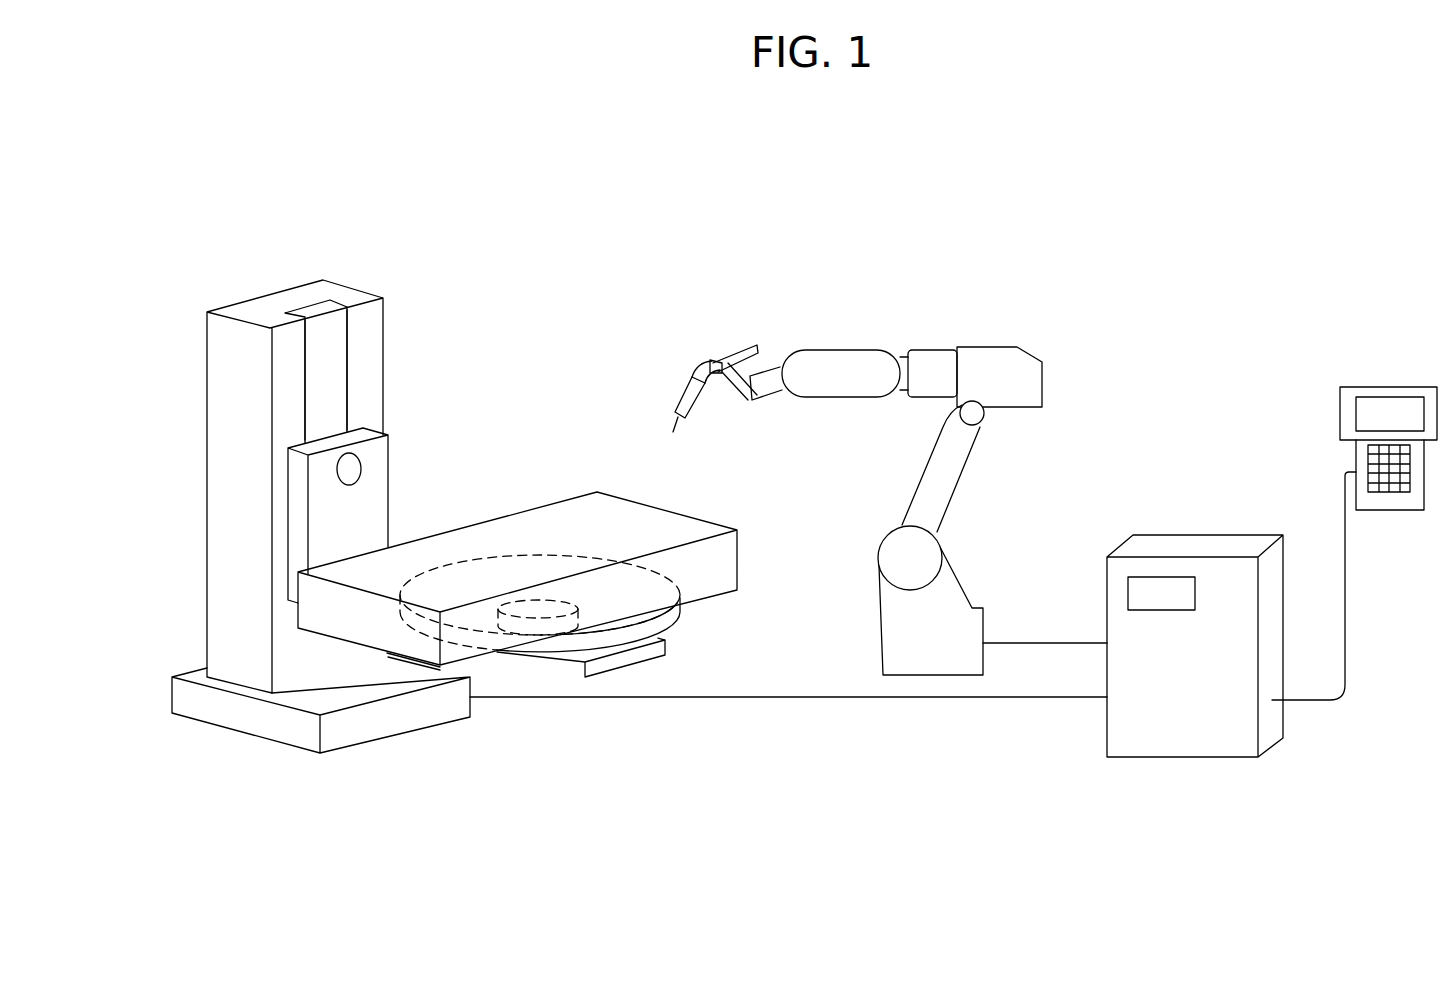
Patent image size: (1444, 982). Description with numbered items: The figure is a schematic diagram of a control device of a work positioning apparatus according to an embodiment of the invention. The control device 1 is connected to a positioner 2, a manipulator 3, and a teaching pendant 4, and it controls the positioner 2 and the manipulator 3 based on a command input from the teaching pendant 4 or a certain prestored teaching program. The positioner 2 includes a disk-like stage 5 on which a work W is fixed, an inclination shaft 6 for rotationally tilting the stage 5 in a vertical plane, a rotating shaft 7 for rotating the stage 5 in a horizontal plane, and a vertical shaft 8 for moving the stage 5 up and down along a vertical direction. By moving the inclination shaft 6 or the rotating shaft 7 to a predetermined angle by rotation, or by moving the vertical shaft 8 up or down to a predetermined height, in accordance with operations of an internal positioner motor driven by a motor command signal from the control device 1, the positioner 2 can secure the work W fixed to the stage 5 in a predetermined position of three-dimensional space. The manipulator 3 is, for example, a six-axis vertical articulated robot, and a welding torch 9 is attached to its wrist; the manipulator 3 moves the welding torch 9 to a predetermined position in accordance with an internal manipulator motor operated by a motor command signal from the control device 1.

The control device 1 is at (1195, 758).
The positioner 2 is at (345, 284).
The manipulator 3 is at (842, 348).
The teaching pendant 4 is at (1340, 413).
The stage 5 is at (670, 617).
The inclination shaft 6 is at (350, 468).
The rotating shaft 7 is at (735, 573).
The vertical shaft 8 is at (335, 372).
The welding torch 9 is at (709, 425).
The work W is at (670, 533).